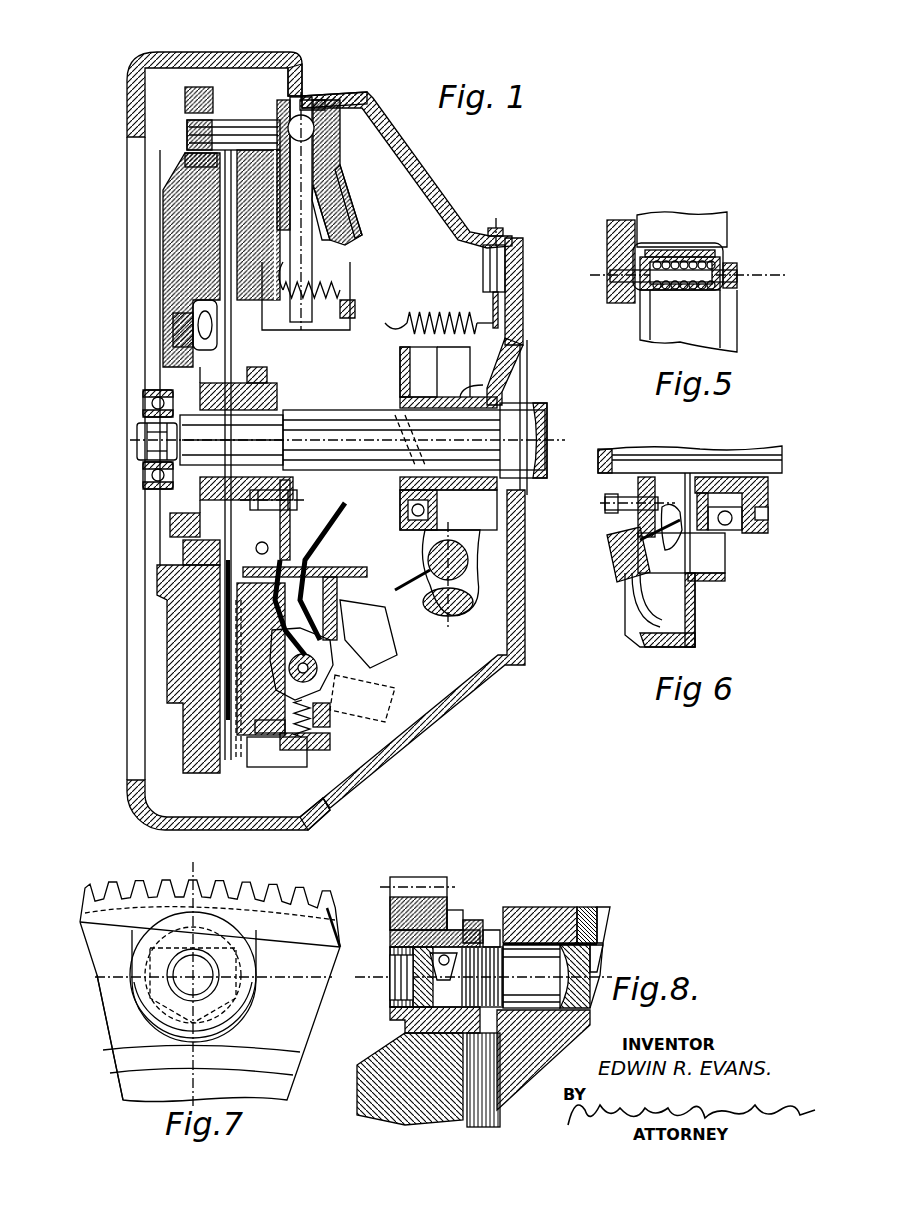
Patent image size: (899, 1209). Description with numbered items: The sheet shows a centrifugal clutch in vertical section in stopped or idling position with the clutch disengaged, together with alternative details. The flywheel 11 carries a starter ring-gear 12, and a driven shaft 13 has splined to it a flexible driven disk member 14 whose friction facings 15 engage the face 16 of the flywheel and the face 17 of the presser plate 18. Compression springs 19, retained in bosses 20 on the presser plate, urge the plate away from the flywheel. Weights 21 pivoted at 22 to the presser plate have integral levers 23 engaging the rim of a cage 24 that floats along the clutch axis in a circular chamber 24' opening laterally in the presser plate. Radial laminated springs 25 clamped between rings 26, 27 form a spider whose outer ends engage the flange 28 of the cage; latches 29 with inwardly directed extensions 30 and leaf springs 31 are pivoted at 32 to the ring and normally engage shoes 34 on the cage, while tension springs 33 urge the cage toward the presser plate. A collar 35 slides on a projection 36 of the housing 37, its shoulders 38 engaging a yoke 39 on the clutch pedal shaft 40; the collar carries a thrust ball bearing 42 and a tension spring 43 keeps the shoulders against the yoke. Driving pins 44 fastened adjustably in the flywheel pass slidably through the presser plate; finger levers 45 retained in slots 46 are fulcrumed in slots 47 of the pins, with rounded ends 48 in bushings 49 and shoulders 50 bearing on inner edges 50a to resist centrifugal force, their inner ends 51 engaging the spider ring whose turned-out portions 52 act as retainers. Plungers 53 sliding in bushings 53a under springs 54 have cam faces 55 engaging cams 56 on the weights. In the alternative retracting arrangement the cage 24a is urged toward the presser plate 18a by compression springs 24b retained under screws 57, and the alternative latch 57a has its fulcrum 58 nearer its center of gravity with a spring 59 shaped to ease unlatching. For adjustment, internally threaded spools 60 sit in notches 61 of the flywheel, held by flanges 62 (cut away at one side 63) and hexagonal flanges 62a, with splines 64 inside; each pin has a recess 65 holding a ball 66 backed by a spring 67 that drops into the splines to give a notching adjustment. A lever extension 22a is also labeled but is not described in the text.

In FIG. 1, the flywheel 11 is at (215, 640).
In FIG. 7, the flywheel 11 is at (157, 1040).
In FIG. 8, the flywheel 11 is at (405, 1075).
In FIG. 1, the starter ring-gear 12 is at (188, 815).
In FIG. 7, the starter ring-gear 12 is at (115, 907).
In FIG. 8, the starter ring-gear 12 is at (410, 898).
In FIG. 1, the driven shaft 13 is at (483, 447).
In FIG. 1, the driven disk member 14 is at (225, 548).
In FIG. 1, the friction facings 15 is at (260, 640).
In FIG. 1, the face of the flywheel 16 is at (213, 507).
In FIG. 1, the face of the presser plate 17 is at (225, 552).
In FIG. 1, the presser plate 18 is at (200, 775).
In FIG. 8, the presser plate 18 is at (560, 928).
In FIG. 5, the presser plate 18a is at (684, 192).
In FIG. 1, the compression springs 19 is at (250, 732).
In FIG. 1, the bosses 20 is at (267, 732).
In FIG. 1, the weights 21 is at (350, 690).
In FIG. 1, the pivot 22 is at (325, 705).
In FIG. 1, the lever extension 22a is at (300, 752).
In FIG. 1, the levers 23 is at (375, 660).
In FIG. 1, the cage 24 is at (373, 634).
In FIG. 1, the circular chamber 24' is at (343, 265).
In FIG. 5, the cage 24a is at (700, 226).
In FIG. 5, the compression springs 24b is at (713, 241).
In FIG. 1, the radial laminated springs 25 is at (330, 568).
In FIG. 1, the ring 26 is at (217, 517).
In FIG. 1, the ring 27 is at (160, 445).
In FIG. 1, the flange 28 is at (240, 600).
In FIG. 1, the latches 29 is at (340, 548).
In FIG. 1, the inwardly directed extensions 30 is at (478, 560).
In FIG. 1, the leaf springs 31 is at (462, 575).
In FIG. 1, the pivot 32 is at (217, 560).
In FIG. 1, the tension springs 33 is at (503, 234).
In FIG. 1, the shoes 34 is at (340, 585).
In FIG. 1, the collar 35 is at (490, 390).
In FIG. 1, the projection 36 is at (458, 400).
In FIG. 1, the housing 37 is at (440, 377).
In FIG. 1, the shoulders 38 is at (420, 460).
In FIG. 1, the yoke 39 is at (453, 503).
In FIG. 1, the clutch pedal shaft 40 is at (465, 548).
In FIG. 1, the thrust ball bearing 42 is at (475, 317).
In FIG. 1, the tension spring 43 is at (500, 303).
In FIG. 1, the driving pins 44 is at (249, 75).
In FIG. 8, the driving pins 44 is at (545, 975).
In FIG. 1, the finger levers 45 is at (302, 230).
In FIG. 1, the slots 46 is at (353, 147).
In FIG. 1, the slots 47 is at (370, 100).
In FIG. 8, the slots 47 is at (592, 957).
In FIG. 1, the rounded ends 48 is at (315, 71).
In FIG. 8, the rounded ends 48 is at (600, 925).
In FIG. 1, the bushings 49 is at (336, 107).
In FIG. 1, the shoulders 50 is at (347, 197).
In FIG. 1, the inner edges 50a is at (347, 178).
In FIG. 1, the inner ends 51 is at (185, 330).
In FIG. 1, the portions 52 is at (275, 382).
In FIG. 1, the plungers 53 is at (277, 752).
In FIG. 1, the bushings 53a is at (320, 813).
In FIG. 1, the springs 54 is at (310, 750).
In FIG. 1, the cam faces 55 is at (305, 722).
In FIG. 1, the cams 56 is at (322, 715).
In FIG. 5, the screws 57 is at (738, 270).
In FIG. 6, the latch 57a is at (688, 540).
In FIG. 6, the fulcrum 58 is at (700, 585).
In FIG. 6, the spring 59 is at (680, 520).
In FIG. 7, the spools 60 is at (175, 1010).
In FIG. 8, the spools 60 is at (435, 940).
In FIG. 7, the notches 61 is at (140, 937).
In FIG. 8, the notches 61 is at (469, 873).
In FIG. 7, the flanges 62 is at (165, 1020).
In FIG. 8, the flanges 62 is at (400, 1020).
In FIG. 8, the hexagonal flanges 62a is at (483, 937).
In FIG. 7, the cut-away side 63 is at (140, 920).
In FIG. 7, the splines 64 is at (170, 1000).
In FIG. 8, the splines 64 is at (405, 978).
In FIG. 8, the recess 65 is at (540, 920).
In FIG. 8, the ball 66 is at (468, 930).
In FIG. 8, the spring 67 is at (425, 962).